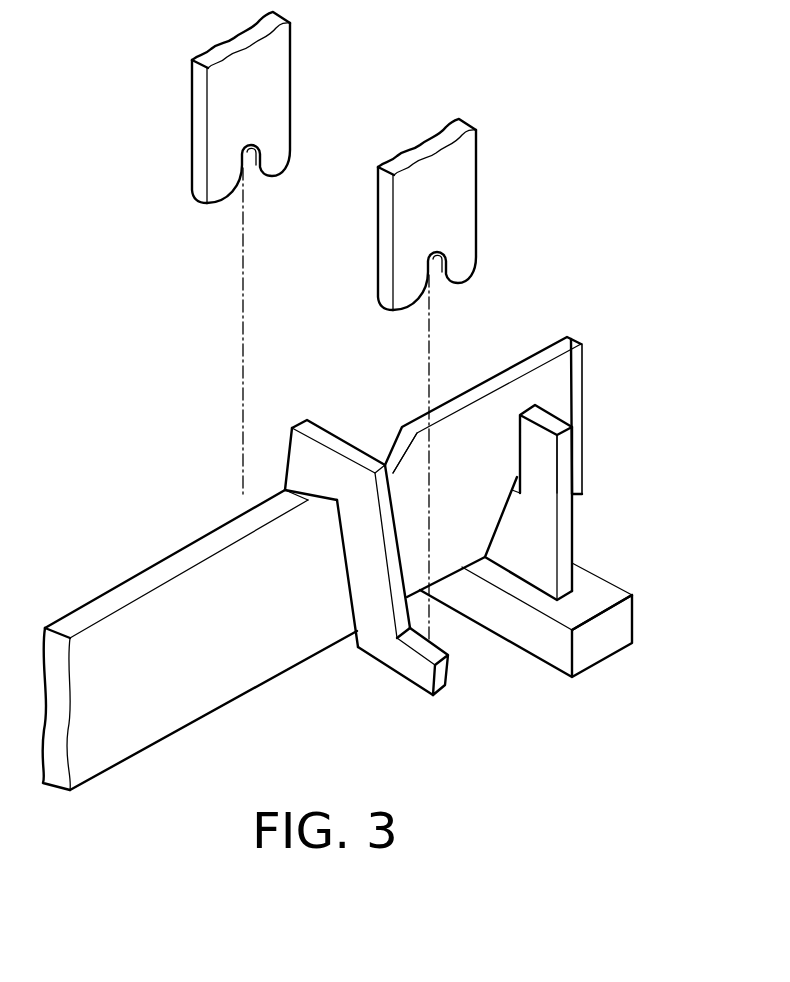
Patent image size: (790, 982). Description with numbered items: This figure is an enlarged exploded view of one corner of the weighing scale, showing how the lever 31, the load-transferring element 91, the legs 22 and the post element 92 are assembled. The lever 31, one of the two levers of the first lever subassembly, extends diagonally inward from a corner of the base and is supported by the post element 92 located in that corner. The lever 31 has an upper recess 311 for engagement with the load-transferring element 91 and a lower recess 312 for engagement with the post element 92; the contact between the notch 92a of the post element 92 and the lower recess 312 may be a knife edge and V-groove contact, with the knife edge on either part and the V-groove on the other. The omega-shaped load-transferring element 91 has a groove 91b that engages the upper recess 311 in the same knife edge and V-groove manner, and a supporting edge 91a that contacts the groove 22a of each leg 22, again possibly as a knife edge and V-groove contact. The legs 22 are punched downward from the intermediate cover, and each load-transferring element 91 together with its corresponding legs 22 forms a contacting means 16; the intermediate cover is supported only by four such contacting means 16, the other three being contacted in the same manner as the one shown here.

The contacting means 16 is at (118, 104).
The leg 22 is at (206, 124).
The groove of the leg 22a is at (261, 172).
The lever 31 is at (508, 377).
The upper recess 311 is at (318, 491).
The lower recess 312 is at (520, 480).
The load-transferring element 91 is at (289, 482).
The supporting edge 91a is at (420, 685).
The groove of the load-transferring element 91b is at (332, 497).
The post element 92 is at (555, 521).
The notch of the post element 92a is at (523, 492).